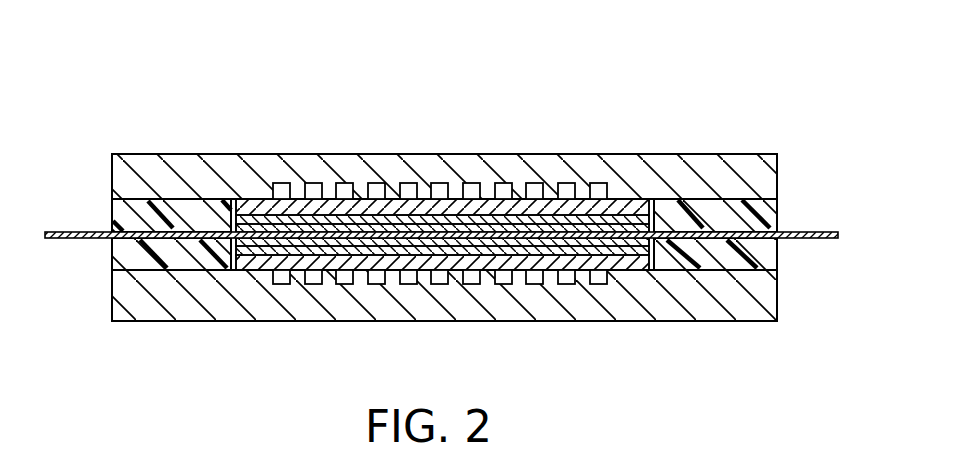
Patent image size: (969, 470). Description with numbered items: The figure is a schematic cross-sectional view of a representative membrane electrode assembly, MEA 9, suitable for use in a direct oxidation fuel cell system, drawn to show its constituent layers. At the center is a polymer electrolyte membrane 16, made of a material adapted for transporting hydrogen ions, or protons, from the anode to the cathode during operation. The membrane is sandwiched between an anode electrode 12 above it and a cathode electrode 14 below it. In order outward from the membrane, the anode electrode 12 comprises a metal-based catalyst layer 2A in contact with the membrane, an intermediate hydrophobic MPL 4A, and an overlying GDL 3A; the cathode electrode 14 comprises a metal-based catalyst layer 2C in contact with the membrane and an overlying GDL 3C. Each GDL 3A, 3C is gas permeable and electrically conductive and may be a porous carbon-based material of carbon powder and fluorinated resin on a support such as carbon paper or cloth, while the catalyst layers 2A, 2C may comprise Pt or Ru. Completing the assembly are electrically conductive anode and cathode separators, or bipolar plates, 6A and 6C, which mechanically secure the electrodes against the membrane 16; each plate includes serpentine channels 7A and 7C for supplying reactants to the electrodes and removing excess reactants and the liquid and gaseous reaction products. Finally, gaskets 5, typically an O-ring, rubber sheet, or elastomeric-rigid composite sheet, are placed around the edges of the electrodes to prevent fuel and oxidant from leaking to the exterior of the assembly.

The MEA 9 is at (721, 98).
The anode electrode 12 is at (103, 153).
The cathode electrode 14 is at (787, 238).
The polymer electrolyte membrane 16 is at (828, 235).
The gaskets 5 is at (127, 257).
The anode separator (bipolar plate) 6A is at (182, 163).
The serpentine channels 7A is at (343, 186).
The hydrophobic MPL 4A is at (475, 214).
The GDL 3A is at (549, 206).
The metal-based catalyst layer 2A is at (629, 222).
The cathode separator (bipolar plate) 6C is at (175, 307).
The serpentine channels 7C is at (377, 284).
The metal-based catalyst layer 2C is at (303, 249).
The GDL 3C is at (562, 260).